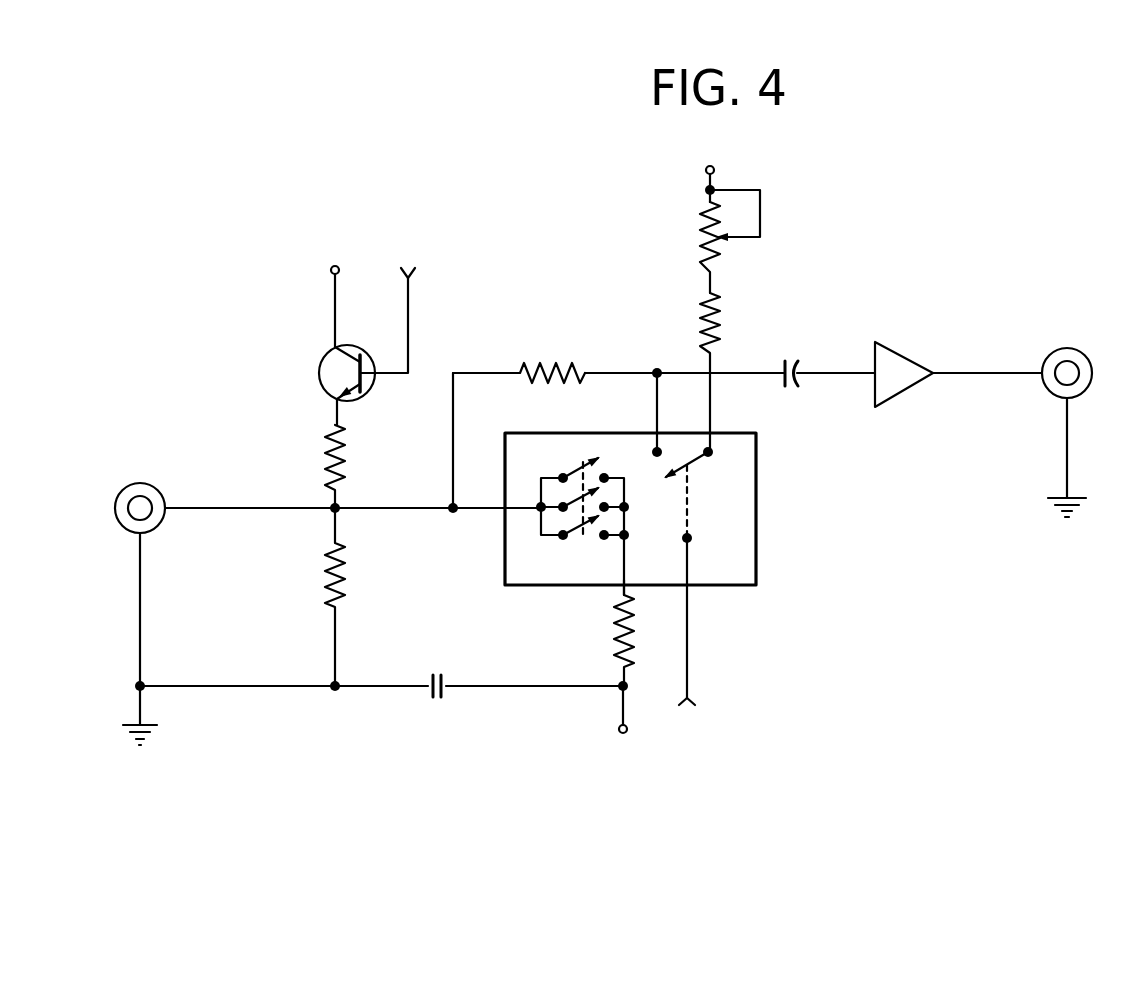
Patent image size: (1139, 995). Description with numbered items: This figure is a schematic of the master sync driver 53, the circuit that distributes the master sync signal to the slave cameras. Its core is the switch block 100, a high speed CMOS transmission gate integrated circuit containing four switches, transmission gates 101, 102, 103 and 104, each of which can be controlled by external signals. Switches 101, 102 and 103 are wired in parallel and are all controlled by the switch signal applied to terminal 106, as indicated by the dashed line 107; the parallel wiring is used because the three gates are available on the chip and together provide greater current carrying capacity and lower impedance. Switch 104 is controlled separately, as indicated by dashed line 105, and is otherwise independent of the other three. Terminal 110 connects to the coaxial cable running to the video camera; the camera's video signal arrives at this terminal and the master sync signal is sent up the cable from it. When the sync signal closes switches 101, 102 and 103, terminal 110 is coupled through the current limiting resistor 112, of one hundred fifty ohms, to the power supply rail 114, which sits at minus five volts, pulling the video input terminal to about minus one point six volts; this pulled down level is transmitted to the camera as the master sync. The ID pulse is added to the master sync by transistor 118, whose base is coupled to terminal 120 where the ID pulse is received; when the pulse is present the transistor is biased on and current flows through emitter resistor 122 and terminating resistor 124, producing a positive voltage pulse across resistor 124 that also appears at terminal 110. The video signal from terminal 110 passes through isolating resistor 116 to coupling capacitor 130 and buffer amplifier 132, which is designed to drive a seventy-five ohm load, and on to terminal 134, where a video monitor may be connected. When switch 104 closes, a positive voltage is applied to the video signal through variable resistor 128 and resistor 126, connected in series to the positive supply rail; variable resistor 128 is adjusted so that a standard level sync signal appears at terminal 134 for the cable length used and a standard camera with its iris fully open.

The detector circuit 53 is at (886, 170).
The switch block 100 is at (758, 462).
The transmission gate 101 is at (578, 470).
The transmission gate 102 is at (598, 494).
The transmission gate 103 is at (578, 531).
The transmission gate 104 is at (694, 460).
The dashed line 105 is at (689, 512).
The terminal 106 is at (696, 587).
The dashed line 107 is at (617, 587).
The terminal 110 is at (140, 483).
The resistor 112 is at (615, 617).
The power supply rail 114 is at (618, 729).
The isolating resistor 116 is at (545, 372).
The transistor 118 is at (319, 376).
The terminal 120 is at (416, 269).
The emitter resistor 122 is at (344, 441).
The terminating resistor 124 is at (345, 560).
The resistor 126 is at (718, 326).
The variable resistor 128 is at (701, 213).
The coupling capacitor 130 is at (793, 362).
The buffer amplifier 132 is at (911, 357).
The terminal 134 is at (1083, 355).